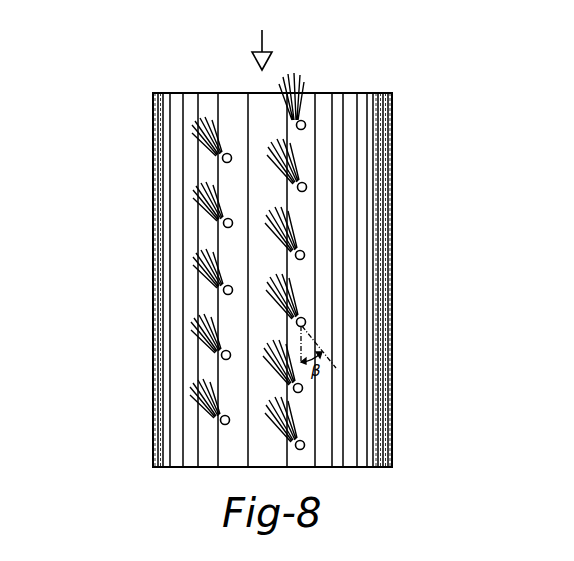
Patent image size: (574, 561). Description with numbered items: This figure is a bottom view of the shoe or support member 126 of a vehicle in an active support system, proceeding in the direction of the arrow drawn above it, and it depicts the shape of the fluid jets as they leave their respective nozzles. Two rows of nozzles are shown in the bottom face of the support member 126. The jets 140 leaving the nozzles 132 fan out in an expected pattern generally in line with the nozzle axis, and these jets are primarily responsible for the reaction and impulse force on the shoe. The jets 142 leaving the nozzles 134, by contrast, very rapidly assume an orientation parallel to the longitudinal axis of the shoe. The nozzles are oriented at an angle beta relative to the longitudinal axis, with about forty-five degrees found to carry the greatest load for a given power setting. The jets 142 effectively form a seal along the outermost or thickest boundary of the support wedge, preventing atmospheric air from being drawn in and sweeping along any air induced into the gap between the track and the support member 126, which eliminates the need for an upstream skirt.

The support member 126 is at (370, 253).
The nozzles 132 is at (222, 296).
The nozzles 134 is at (304, 387).
The jets 140 is at (190, 412).
The jets 142 is at (297, 290).